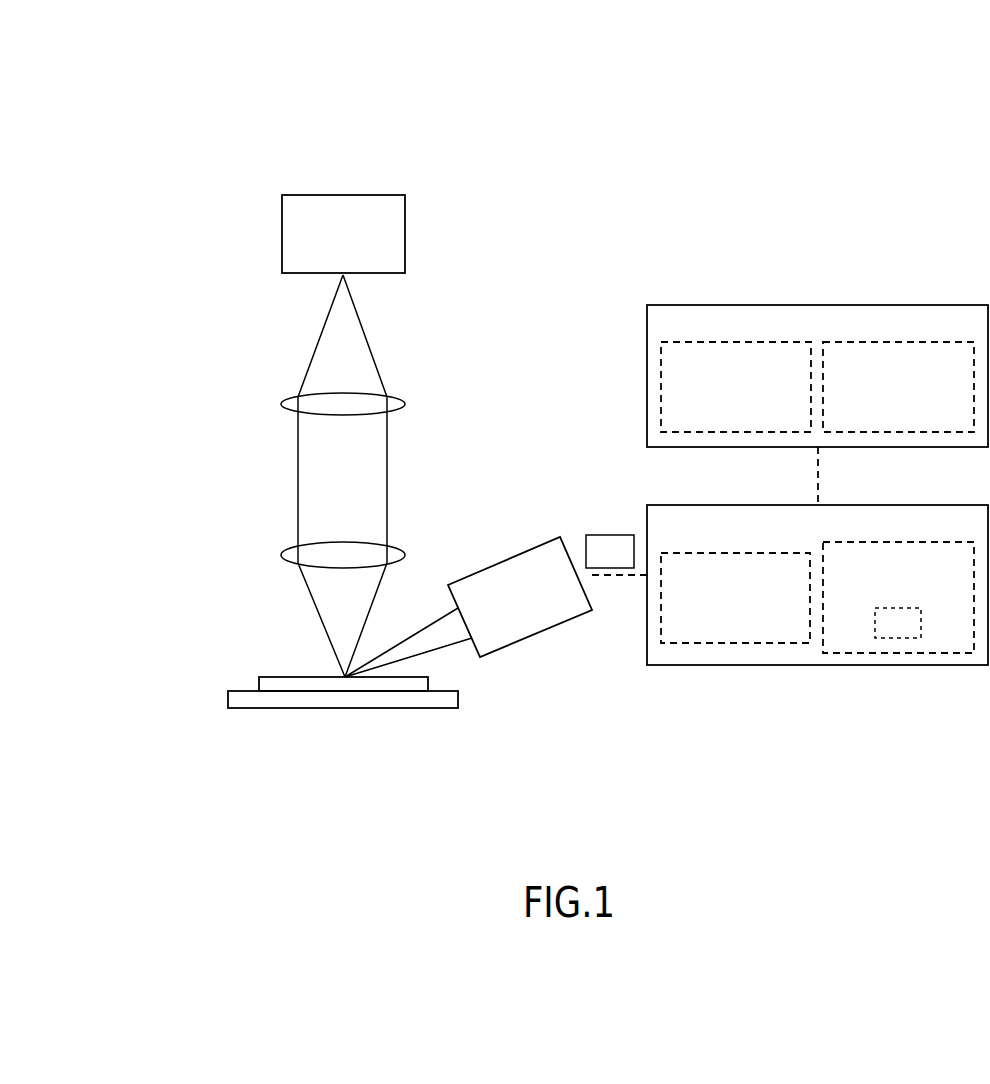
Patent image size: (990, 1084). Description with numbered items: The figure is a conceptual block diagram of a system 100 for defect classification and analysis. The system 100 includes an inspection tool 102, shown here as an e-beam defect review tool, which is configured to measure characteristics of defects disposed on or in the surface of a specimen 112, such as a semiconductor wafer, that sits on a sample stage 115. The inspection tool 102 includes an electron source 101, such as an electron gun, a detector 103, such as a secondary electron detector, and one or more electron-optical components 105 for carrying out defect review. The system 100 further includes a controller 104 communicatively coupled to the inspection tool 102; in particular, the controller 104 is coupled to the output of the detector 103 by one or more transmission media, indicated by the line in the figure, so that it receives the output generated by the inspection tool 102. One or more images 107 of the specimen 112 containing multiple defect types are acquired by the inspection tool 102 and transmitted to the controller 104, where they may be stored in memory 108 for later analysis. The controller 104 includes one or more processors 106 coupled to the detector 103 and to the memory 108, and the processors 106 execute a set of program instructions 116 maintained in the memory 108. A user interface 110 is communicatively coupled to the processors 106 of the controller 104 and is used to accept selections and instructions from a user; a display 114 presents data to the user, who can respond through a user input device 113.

The system 100 is at (130, 107).
The electron source 101 is at (360, 243).
The inspection tool 102 is at (259, 166).
The detector 103 is at (533, 609).
The controller 104 is at (686, 530).
The electron-optical components 105 is at (277, 288).
The processors 106 is at (700, 578).
The images 107 is at (627, 562).
The memory 108 is at (864, 571).
The user interface 110 is at (686, 330).
The specimen 112 is at (259, 679).
The user input device 113 is at (700, 368).
The display 114 is at (864, 368).
The sample stage 115 is at (229, 697).
The program instructions 116 is at (898, 623).